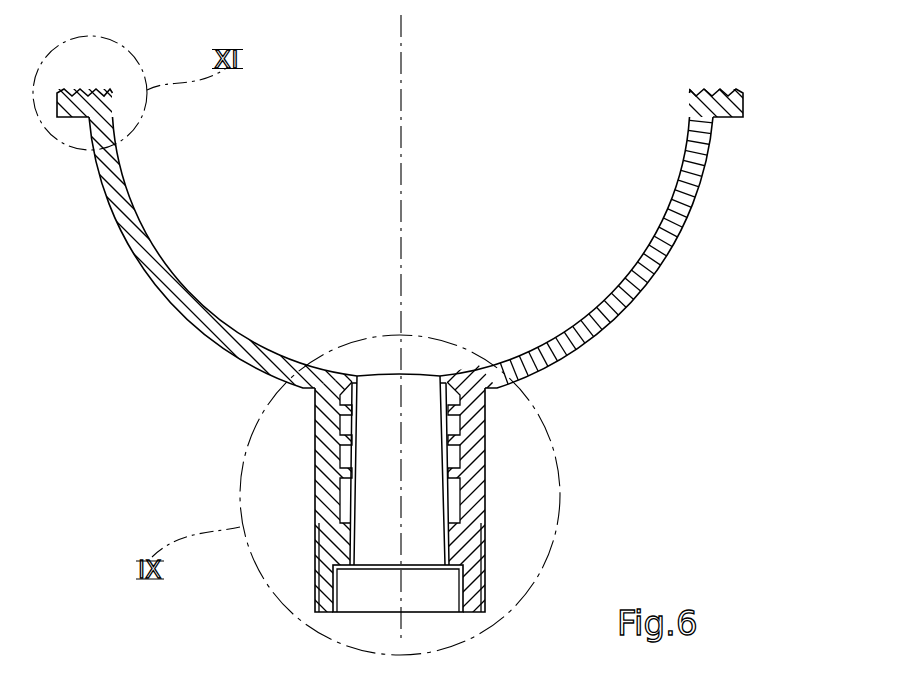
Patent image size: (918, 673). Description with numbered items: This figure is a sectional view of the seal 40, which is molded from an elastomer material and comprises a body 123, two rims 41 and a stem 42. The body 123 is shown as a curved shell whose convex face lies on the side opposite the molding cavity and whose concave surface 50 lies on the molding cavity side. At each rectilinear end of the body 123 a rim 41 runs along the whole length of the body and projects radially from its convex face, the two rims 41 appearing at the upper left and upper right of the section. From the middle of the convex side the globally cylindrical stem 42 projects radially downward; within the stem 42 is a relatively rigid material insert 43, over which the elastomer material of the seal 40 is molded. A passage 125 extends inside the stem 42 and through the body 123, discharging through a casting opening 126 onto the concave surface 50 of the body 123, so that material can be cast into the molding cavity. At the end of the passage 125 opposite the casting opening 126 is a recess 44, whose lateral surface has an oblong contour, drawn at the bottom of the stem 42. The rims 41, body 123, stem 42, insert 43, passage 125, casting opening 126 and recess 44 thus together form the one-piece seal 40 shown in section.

The seal 40 is at (735, 69).
The rim 41 is at (68, 121).
The concave surface 50 is at (225, 310).
The body 123 is at (657, 257).
The stem 42 is at (504, 532).
The insert 43 is at (467, 499).
The passage 125 is at (372, 494).
The casting opening 126 is at (422, 388).
The recess 44 is at (352, 600).